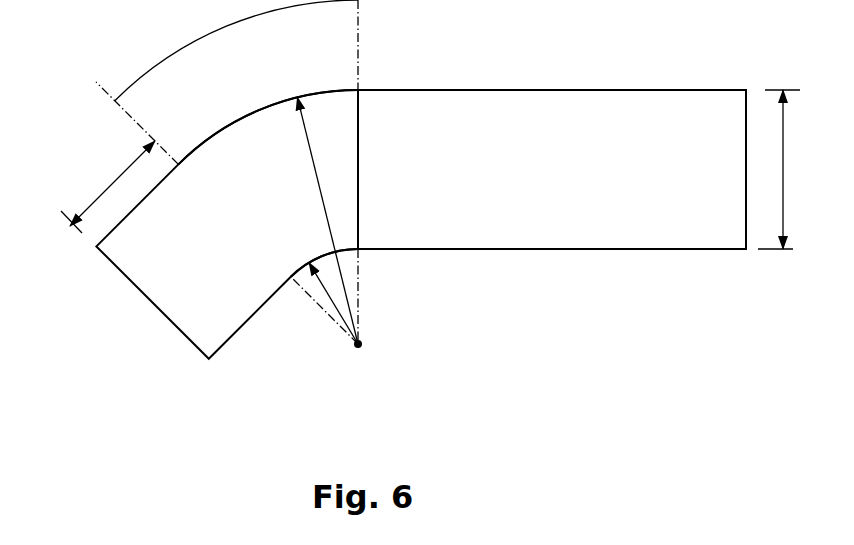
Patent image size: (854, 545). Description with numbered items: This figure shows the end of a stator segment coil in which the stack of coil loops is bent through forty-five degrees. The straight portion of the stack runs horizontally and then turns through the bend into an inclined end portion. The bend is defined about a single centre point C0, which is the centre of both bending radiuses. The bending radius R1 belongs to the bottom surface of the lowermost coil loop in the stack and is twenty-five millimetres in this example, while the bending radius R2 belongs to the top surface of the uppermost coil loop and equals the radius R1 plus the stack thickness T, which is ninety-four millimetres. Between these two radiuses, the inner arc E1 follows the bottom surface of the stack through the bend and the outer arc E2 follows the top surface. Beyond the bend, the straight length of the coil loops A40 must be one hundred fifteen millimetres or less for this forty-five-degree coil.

The inner arc E1 is at (345, 250).
The outer arc E2 is at (221, 134).
The centre of the bending radiuses C0 is at (376, 346).
The bending radius of the bottom surface R1 is at (322, 292).
The bending radius of the top surface R2 is at (318, 206).
The length of the coil loops after the bend A40 is at (108, 187).
The thickness of the stack of coil loops T is at (782, 169).